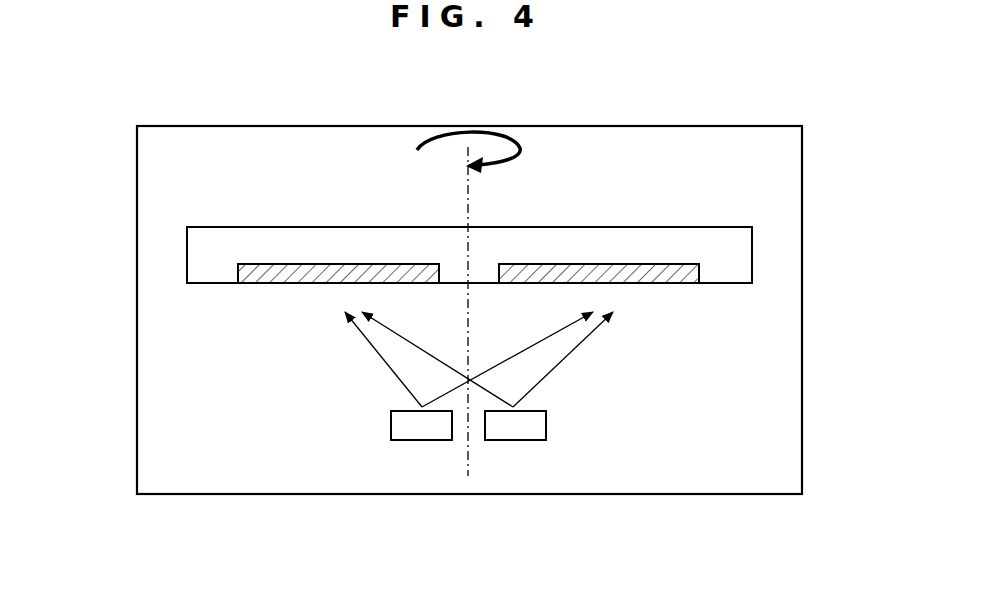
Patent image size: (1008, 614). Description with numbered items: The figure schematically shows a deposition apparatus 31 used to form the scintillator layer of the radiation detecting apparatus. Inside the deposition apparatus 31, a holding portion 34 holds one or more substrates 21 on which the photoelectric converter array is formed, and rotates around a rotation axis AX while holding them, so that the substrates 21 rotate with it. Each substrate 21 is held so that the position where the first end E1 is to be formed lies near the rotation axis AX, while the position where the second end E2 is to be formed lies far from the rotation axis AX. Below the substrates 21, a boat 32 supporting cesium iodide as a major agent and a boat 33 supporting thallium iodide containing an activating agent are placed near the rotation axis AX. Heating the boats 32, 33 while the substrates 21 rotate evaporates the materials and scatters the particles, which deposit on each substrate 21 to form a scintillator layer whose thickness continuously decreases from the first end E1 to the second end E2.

The substrate 21 is at (283, 283).
The deposition apparatus 31 is at (657, 494).
The boat 32 is at (518, 440).
The boat 33 is at (422, 440).
The holding portion 34 is at (633, 227).
The rotation axis AX is at (472, 187).
The first end E1 is at (439, 262).
The second end E2 is at (239, 262).